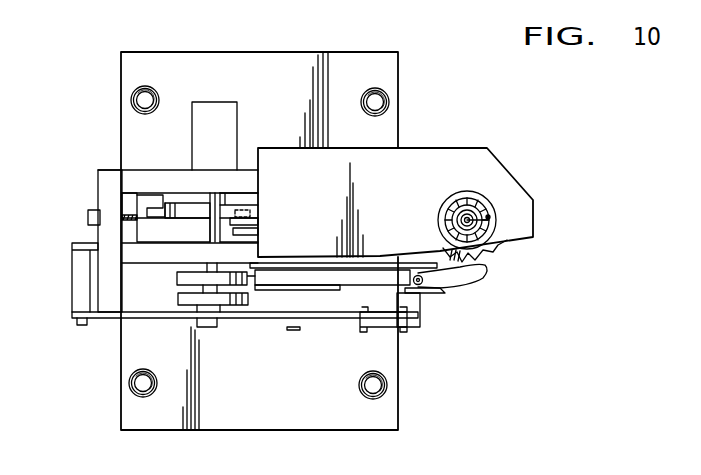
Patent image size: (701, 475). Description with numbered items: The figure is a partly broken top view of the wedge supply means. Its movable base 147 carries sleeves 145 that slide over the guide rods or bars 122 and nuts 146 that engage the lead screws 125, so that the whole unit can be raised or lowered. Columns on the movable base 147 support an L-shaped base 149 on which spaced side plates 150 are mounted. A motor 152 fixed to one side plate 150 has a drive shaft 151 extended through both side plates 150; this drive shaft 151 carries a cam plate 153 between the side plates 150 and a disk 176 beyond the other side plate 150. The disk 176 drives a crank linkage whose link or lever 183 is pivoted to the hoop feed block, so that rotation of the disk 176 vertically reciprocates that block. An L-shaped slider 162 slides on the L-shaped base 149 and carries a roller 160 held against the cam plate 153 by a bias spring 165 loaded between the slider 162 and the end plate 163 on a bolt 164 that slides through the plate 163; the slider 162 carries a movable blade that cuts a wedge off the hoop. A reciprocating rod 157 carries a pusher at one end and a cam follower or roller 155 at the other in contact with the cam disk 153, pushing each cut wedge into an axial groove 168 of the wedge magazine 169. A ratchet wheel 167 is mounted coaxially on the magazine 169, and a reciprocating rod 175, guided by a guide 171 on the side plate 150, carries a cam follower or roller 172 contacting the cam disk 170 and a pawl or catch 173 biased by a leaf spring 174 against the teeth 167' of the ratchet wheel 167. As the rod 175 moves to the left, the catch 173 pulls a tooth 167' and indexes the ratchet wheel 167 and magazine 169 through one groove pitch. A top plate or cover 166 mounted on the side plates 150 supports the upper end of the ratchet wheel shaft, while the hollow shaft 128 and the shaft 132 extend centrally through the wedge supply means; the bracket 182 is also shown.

The guide rods or bars 122 is at (140, 100).
The lead screws 125 is at (382, 106).
The hollow shaft 128 is at (488, 217).
The shaft 132 is at (488, 217).
The sleeves 145 is at (135, 92).
The nuts 146 is at (384, 92).
The movable base 147 is at (245, 420).
The L-shaped base 149 is at (128, 202).
The side plates 150 is at (123, 252).
The drive shaft 151 is at (210, 230).
The motor 152 is at (220, 108).
The cam plate 153 is at (258, 212).
The cam follower or roller 155 is at (258, 221).
The reciprocating rod 157 is at (258, 236).
The roller 160 is at (160, 200).
The L-shaped slider 162 is at (145, 197).
The side plate 163 is at (107, 233).
The bolt 164 is at (88, 218).
The bias spring 165 is at (127, 217).
The top plate or cover 166 is at (493, 163).
The ratchet wheel 167 is at (431, 227).
The teeth 167' is at (500, 254).
The axial grooves 168 is at (447, 213).
The wedge magazine 169 is at (457, 193).
The cam disk 170 is at (180, 278).
The guide 171 is at (340, 290).
The cam follower or roller 172 is at (258, 285).
The pawl or catch 173 is at (475, 283).
The leaf spring 174 is at (430, 293).
The reciprocating rod 175 is at (305, 283).
The disk 176 is at (180, 300).
The bracket 182 is at (417, 307).
The link or lever 183 is at (384, 315).